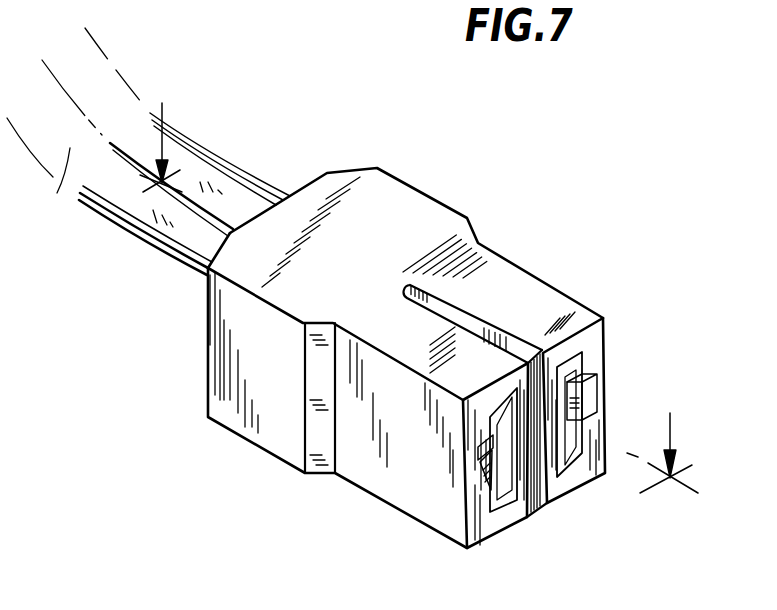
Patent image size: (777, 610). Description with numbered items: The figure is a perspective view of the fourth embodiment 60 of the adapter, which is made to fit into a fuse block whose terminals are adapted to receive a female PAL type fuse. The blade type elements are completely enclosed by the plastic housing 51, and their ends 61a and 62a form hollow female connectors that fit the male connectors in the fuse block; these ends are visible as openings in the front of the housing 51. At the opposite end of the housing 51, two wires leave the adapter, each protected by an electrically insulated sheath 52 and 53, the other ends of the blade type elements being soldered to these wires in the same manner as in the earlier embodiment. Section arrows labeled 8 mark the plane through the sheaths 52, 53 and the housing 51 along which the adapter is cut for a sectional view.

The section line 8- 8 is at (419, 276).
The plastic housing 51 is at (412, 222).
The electrically insulated sheath 52 is at (107, 110).
The electrically insulated sheath 53 is at (66, 183).
The fourth embodiment 60 is at (546, 211).
The end of blade type element 61a is at (577, 392).
The end of blade type element 62a is at (473, 483).